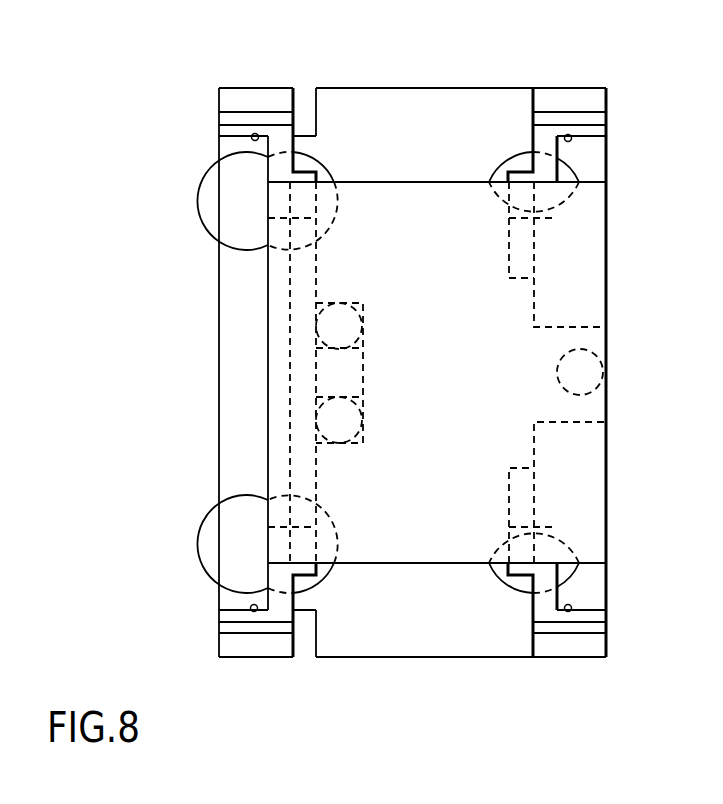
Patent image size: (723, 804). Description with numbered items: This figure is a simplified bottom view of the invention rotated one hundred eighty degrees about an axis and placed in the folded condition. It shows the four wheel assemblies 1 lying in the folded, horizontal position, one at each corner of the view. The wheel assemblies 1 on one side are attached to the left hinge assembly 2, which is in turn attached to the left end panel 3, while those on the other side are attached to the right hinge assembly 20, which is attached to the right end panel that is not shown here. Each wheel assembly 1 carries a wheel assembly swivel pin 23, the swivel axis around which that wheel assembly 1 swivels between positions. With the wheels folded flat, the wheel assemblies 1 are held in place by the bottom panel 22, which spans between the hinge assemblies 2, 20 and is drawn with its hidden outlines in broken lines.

The wheel assembly 1 is at (219, 121).
The left hinge assembly 2 is at (252, 88).
The left end panel 3 is at (219, 397).
The right hinge assembly 20 is at (572, 88).
The bottom panel 22 is at (268, 315).
The wheel assembly swivel pin 23 is at (255, 139).